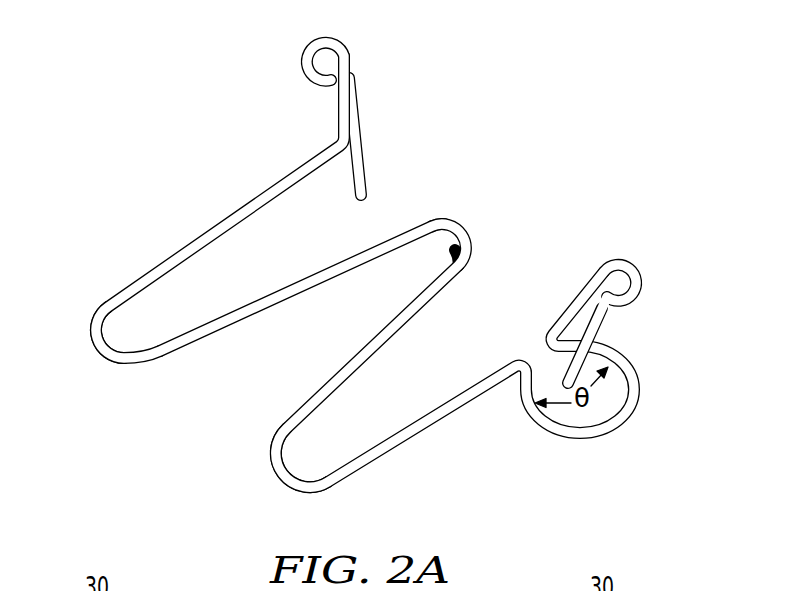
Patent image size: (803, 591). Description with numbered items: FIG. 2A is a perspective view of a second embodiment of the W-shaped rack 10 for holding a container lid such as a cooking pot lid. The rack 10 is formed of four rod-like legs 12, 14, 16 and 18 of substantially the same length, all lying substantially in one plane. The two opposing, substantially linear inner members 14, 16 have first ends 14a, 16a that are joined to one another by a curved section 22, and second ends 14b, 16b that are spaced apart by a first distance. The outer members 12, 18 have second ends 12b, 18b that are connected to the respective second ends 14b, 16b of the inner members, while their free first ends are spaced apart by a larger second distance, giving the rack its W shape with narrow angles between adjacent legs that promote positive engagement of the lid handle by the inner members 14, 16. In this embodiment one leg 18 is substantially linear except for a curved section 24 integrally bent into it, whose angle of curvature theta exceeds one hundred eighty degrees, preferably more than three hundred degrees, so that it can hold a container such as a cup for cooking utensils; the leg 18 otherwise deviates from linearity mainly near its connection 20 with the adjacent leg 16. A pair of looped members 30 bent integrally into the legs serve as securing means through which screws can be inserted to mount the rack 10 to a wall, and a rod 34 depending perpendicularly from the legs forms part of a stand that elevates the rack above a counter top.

The W-shaped rack 10 is at (126, 139).
The leg 12 is at (165, 256).
The second end of outer member 12b is at (100, 305).
The leg 14 is at (333, 268).
The first end of inner member 14a is at (417, 227).
The second end of inner member 14b is at (139, 351).
The leg 16 is at (408, 313).
The first end of inner member 16a is at (472, 250).
The second end of inner member 16b is at (280, 437).
The leg 18 is at (433, 427).
The second end of outer member 18b is at (328, 478).
The connection 20 is at (140, 378).
The curved section 22 is at (426, 209).
The curved section 24 is at (633, 383).
The looped member 30 is at (304, 47).
The rod 34 is at (362, 166).